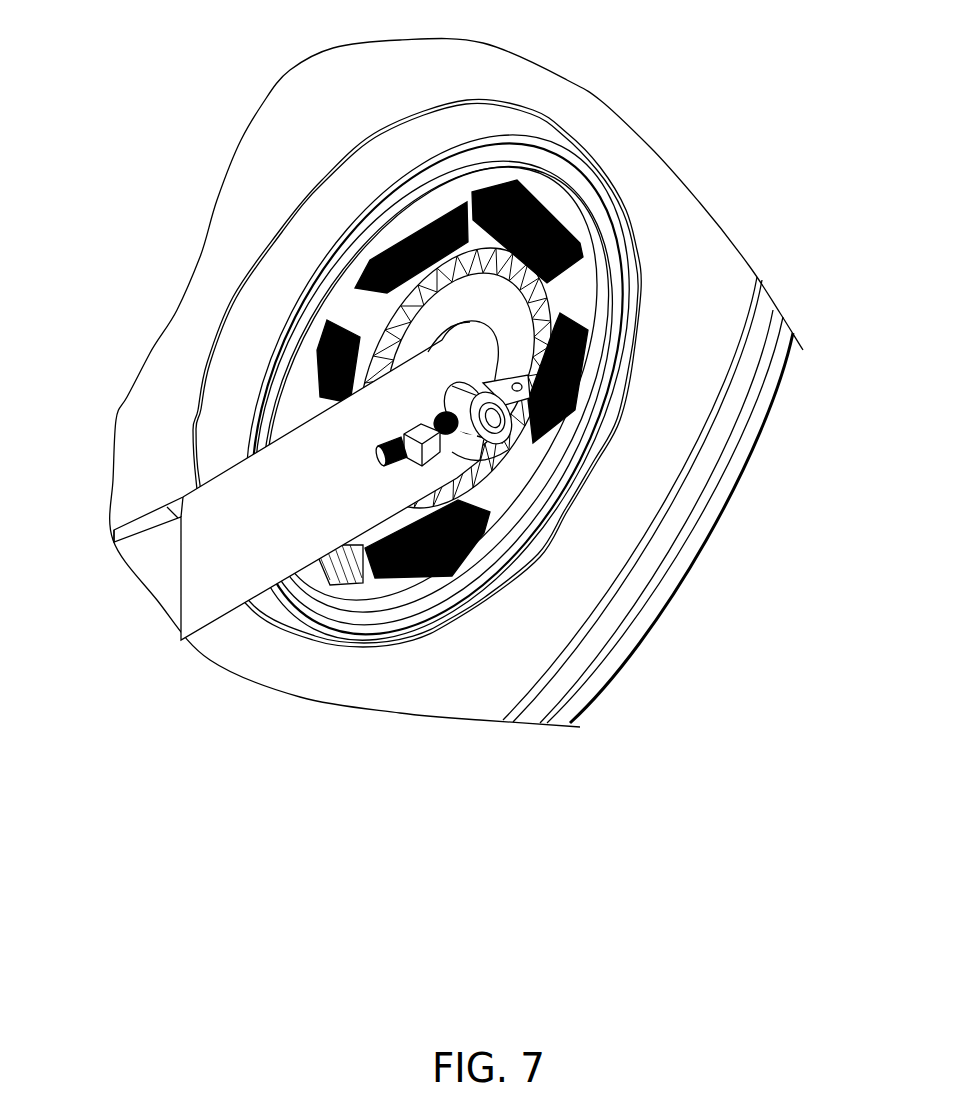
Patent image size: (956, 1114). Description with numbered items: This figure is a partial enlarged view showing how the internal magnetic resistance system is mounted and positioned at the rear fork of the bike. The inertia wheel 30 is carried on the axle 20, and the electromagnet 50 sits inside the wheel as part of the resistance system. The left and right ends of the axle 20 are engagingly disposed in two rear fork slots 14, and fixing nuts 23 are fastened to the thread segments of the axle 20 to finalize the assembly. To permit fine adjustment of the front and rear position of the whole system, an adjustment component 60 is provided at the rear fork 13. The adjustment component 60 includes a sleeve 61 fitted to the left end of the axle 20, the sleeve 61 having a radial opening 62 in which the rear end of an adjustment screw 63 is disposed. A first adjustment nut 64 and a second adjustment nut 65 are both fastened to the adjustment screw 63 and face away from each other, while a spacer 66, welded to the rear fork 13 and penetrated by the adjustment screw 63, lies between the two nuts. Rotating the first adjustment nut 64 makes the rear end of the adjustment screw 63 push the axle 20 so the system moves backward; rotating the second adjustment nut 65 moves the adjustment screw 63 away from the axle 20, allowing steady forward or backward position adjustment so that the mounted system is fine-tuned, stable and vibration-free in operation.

The rear fork 13 is at (257, 520).
The rear fork slots 14 is at (583, 370).
The axle 20 is at (530, 440).
The fixing nuts 23 is at (492, 478).
The inertia wheel 30 is at (307, 88).
The electromagnet 50 is at (592, 272).
The adjustment component 60 is at (385, 416).
The sleeve 61 is at (380, 257).
The radial opening 62 is at (323, 293).
The adjustment screw 63 is at (470, 392).
The first adjustment nut 64 is at (413, 467).
The second adjustment nut 65 is at (472, 447).
The spacer 66 is at (442, 450).